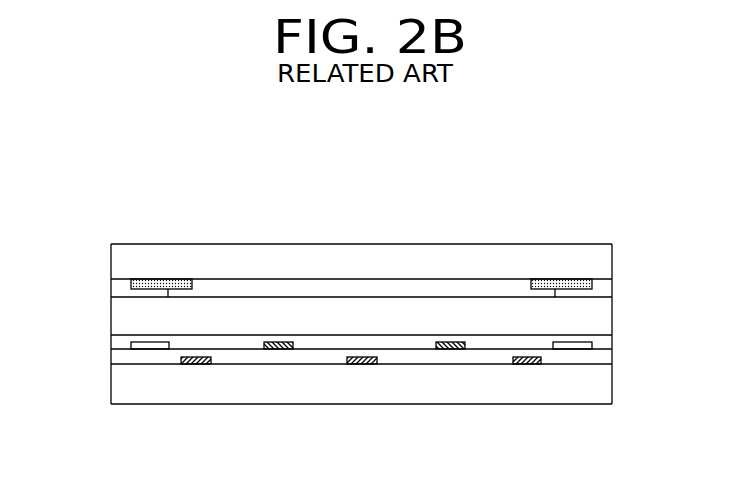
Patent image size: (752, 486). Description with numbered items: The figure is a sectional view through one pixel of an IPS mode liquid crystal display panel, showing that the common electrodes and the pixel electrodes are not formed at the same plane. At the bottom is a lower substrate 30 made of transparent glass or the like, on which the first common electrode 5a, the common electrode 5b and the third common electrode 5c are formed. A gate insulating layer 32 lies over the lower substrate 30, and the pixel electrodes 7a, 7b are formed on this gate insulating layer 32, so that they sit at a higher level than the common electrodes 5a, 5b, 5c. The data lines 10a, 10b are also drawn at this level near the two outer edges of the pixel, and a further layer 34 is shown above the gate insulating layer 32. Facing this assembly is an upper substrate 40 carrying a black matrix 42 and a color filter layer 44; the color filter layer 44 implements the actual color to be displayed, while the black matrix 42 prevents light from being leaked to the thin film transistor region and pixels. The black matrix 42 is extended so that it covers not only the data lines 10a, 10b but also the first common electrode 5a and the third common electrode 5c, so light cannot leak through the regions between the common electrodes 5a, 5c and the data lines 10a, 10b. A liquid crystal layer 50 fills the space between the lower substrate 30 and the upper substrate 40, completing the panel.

The upper substrate 40 is at (502, 263).
The black matrix 42 is at (155, 285).
The color filter layer 44 is at (353, 290).
The liquid crystal layer 50 is at (600, 315).
The passivation layer 34 is at (600, 345).
The gate insulating layer 32 is at (600, 357).
The lower substrate 30 is at (118, 382).
The data line 10a is at (151, 349).
The data line 10b is at (573, 349).
The first common electrode 5a is at (196, 364).
The common electrode 5b is at (362, 364).
The third common electrode 5c is at (525, 364).
The pixel electrode 7a is at (281, 349).
The pixel electrode 7b is at (448, 349).